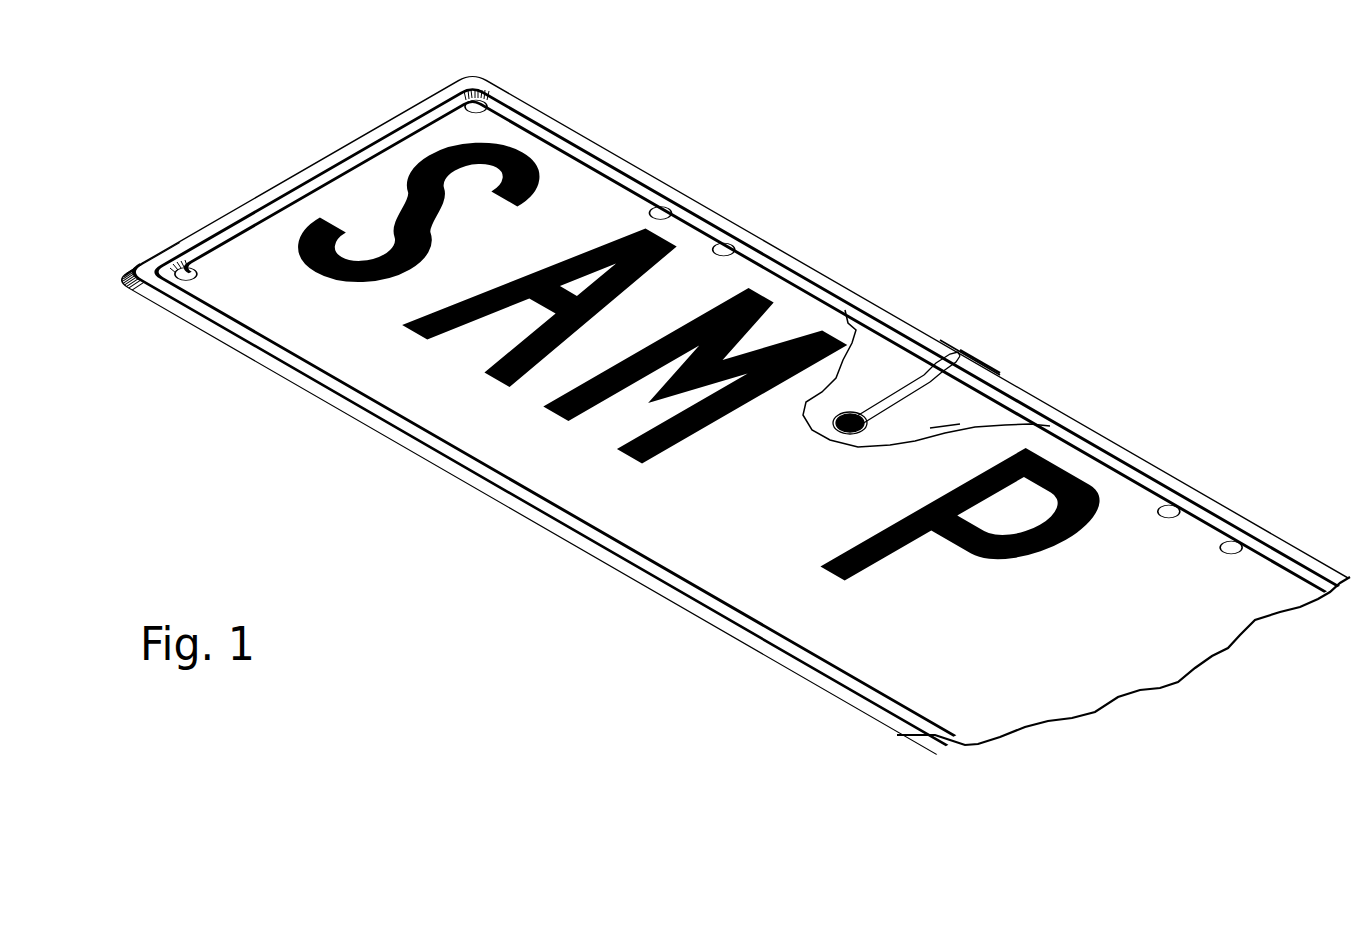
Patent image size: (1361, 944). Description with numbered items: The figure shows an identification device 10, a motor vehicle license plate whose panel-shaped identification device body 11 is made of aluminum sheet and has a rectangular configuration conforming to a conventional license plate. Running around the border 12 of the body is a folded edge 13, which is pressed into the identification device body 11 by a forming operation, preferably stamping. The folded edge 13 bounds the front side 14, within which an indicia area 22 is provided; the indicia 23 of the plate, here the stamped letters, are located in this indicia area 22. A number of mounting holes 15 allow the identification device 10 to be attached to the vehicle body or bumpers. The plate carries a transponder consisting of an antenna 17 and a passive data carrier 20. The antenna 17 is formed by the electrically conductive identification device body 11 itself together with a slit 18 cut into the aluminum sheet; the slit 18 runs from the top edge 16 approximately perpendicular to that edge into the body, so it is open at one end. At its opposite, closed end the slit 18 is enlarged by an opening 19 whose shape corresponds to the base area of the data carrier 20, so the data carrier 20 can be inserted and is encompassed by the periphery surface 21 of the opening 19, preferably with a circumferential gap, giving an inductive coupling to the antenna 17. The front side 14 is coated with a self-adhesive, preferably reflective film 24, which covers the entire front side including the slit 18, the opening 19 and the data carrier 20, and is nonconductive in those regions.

The identification device 10 is at (1043, 250).
The identification device body 11 is at (1008, 740).
The border 12 is at (535, 103).
The folded edge 13 is at (1313, 563).
The front side 14 is at (948, 400).
The mounting holes 15 is at (666, 205).
The top edge 16 is at (966, 347).
The antenna 17 is at (983, 333).
The slit 18 is at (950, 368).
The opening 19 is at (1010, 425).
The data carrier 20 is at (946, 352).
The periphery surface 21 is at (858, 417).
The indicia area 22 is at (745, 437).
The indicia 23 is at (535, 158).
The film 24 is at (852, 413).